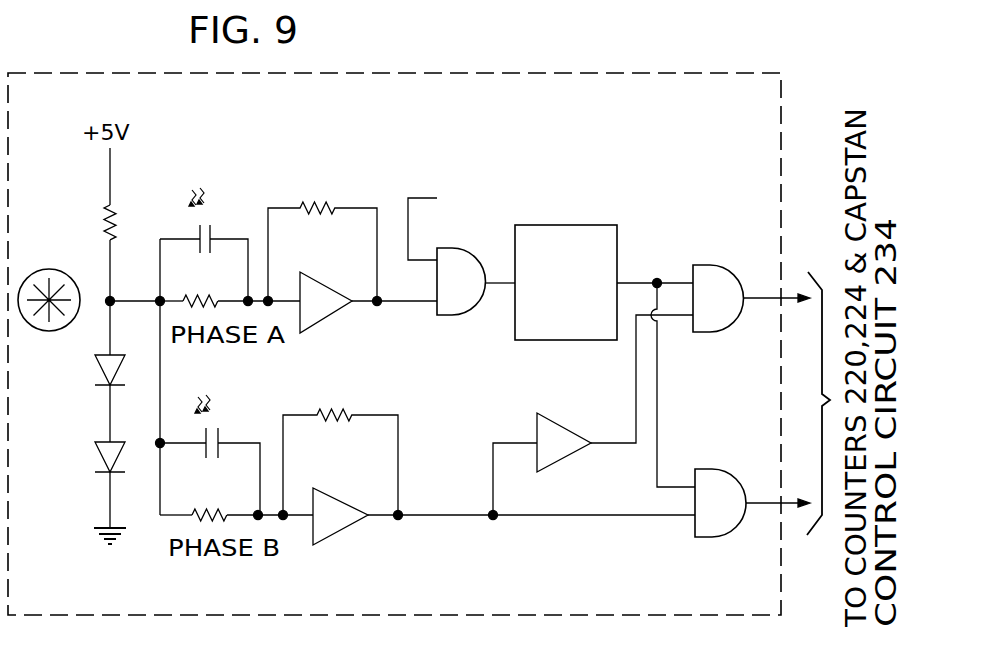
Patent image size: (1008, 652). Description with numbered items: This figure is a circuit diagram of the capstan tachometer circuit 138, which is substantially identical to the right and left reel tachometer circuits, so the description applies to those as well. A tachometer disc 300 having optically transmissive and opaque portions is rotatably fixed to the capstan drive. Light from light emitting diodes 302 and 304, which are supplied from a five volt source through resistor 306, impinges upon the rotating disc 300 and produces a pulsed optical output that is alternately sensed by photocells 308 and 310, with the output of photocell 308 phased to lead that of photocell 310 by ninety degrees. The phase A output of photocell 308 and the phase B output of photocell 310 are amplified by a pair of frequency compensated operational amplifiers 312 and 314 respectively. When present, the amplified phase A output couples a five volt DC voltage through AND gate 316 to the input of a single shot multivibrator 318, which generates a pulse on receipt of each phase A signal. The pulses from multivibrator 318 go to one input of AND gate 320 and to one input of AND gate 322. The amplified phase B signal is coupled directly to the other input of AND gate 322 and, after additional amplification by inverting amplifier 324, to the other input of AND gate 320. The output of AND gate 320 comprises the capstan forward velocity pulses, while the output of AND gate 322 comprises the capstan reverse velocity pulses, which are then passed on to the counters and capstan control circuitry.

The capstan tachometer circuit 138 is at (421, 76).
The tachometer disc 300 is at (79, 240).
The light emitting diode 302 is at (94, 367).
The light emitting diode 304 is at (94, 448).
The resistor 306 is at (102, 216).
The photocell 308 is at (224, 262).
The photocell 310 is at (226, 469).
The frequency compensated operational amplifier 312 is at (330, 312).
The frequency compensated operational amplifier 314 is at (345, 527).
The AND gate 316 is at (460, 316).
The single shot multivibrator 318 is at (556, 225).
The AND gate 320 is at (718, 232).
The AND gate 322 is at (743, 430).
The inverting amplifier 324 is at (548, 414).